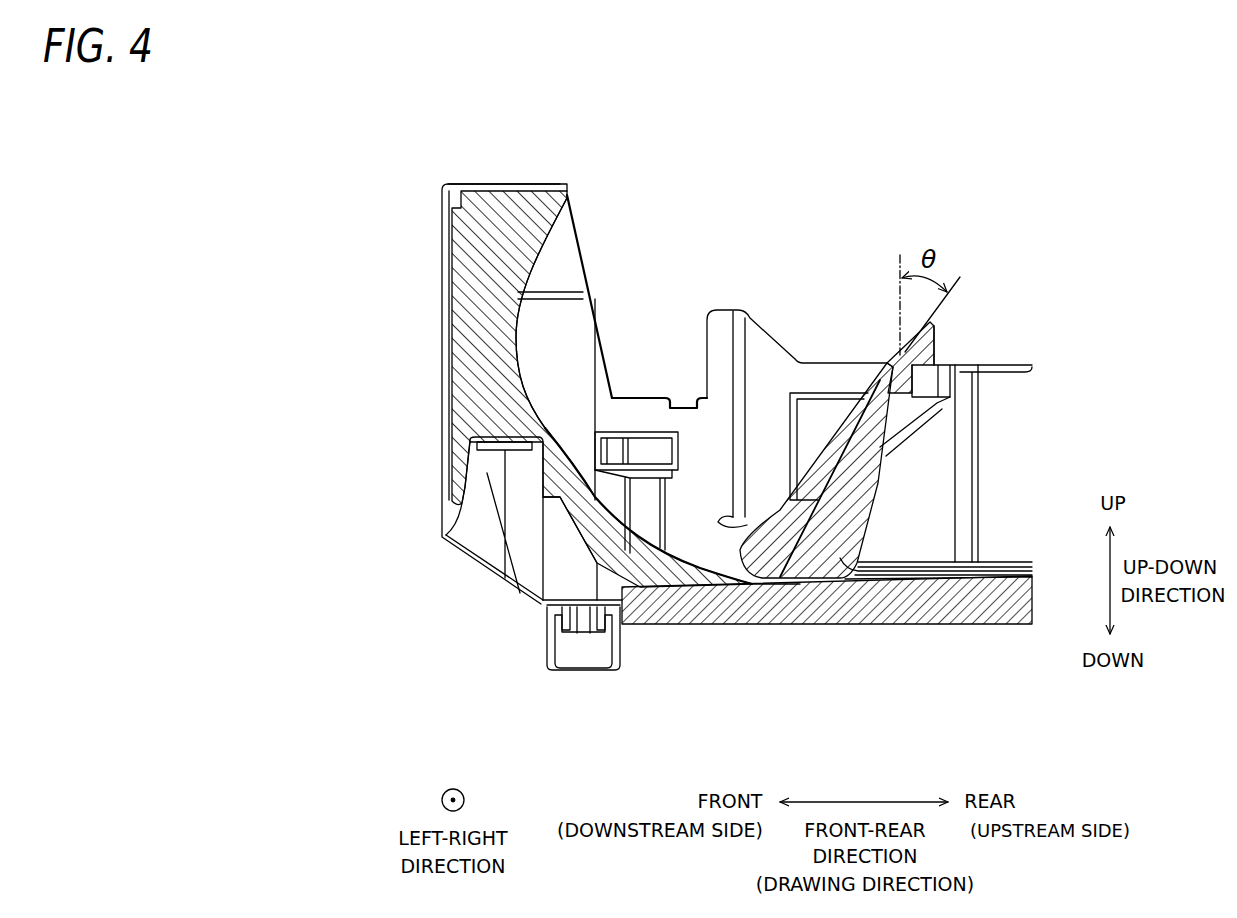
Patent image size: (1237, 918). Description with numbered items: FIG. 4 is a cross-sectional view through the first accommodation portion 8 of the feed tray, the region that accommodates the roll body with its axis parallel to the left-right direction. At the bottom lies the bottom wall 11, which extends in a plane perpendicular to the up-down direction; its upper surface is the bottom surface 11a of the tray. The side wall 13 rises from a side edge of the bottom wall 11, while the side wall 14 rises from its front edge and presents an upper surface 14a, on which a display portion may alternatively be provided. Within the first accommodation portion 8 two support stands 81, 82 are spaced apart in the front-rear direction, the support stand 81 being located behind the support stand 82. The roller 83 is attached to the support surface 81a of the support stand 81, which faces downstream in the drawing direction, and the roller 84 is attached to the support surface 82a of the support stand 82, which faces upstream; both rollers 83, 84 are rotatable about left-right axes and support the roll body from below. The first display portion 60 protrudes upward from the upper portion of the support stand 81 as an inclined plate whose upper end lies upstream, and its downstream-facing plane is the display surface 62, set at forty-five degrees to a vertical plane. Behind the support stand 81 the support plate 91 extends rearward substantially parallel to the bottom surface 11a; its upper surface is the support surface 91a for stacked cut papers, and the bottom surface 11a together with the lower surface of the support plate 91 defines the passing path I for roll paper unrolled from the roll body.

The first accommodation portion 8 is at (674, 237).
The bottom wall 11 is at (720, 626).
The bottom surface 11a is at (933, 580).
The side wall 13 is at (995, 378).
The side wall 14 is at (445, 418).
The upper surface 14a is at (500, 184).
The first display portion 60 is at (936, 352).
The display surface 62 is at (905, 345).
The support stand 81 is at (878, 470).
The support surface 81a is at (828, 468).
The support stand 82 is at (455, 272).
The support surface 82a is at (531, 397).
The roller 83 is at (742, 520).
The roller 84 is at (584, 452).
The support plate 91 is at (1005, 560).
The support surface 91a is at (945, 562).
The passing path I is at (797, 584).